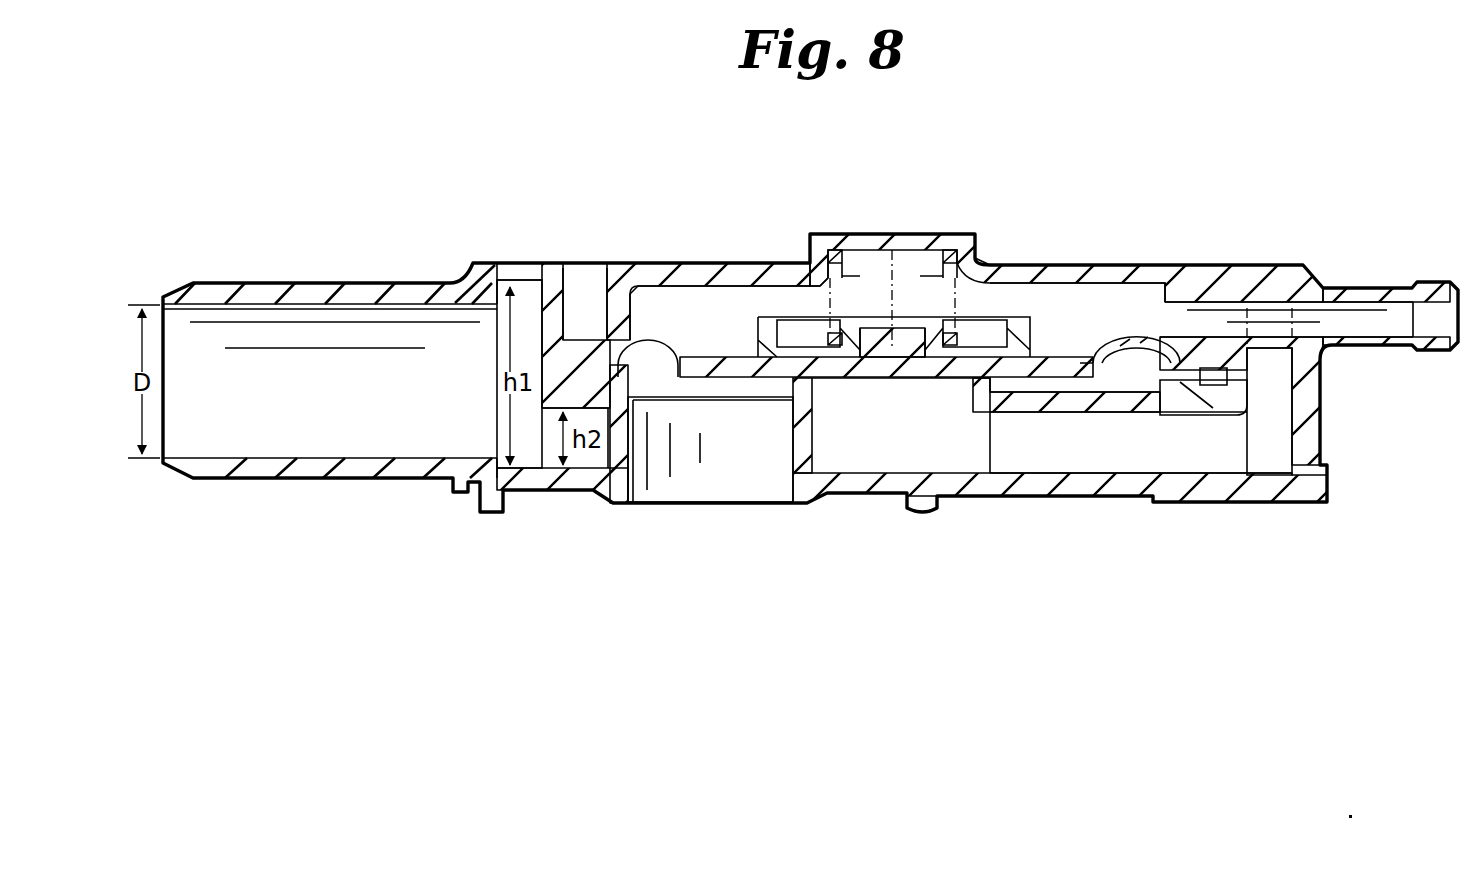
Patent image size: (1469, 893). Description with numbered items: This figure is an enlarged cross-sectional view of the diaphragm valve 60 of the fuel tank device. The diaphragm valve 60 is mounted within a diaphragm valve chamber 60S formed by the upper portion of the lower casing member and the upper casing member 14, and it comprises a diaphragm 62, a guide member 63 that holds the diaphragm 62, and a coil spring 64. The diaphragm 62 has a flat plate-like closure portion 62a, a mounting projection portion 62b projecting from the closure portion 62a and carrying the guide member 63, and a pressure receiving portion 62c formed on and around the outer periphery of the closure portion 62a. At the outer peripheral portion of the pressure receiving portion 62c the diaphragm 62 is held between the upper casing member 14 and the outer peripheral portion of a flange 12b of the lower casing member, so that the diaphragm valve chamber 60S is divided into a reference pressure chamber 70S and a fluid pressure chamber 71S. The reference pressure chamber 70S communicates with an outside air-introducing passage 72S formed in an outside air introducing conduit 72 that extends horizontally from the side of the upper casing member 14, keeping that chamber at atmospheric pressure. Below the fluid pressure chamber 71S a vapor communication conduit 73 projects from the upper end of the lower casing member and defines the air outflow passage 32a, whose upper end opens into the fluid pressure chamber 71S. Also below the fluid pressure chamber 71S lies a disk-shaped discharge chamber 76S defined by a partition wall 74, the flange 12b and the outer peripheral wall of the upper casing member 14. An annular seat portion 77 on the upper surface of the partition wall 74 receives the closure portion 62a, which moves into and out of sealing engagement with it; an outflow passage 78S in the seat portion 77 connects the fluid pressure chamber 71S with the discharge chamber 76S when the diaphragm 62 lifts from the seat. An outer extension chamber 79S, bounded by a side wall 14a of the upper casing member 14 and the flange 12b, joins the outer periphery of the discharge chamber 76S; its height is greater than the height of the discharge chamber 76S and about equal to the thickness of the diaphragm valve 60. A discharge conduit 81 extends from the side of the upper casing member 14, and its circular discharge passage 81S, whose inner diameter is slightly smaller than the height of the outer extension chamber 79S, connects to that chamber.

The flange 12b is at (1268, 493).
The upper casing member 14 is at (963, 255).
The side wall 14a is at (1325, 448).
The air outflow passage 32a is at (728, 492).
The diaphragm valve 60 is at (1080, 298).
The diaphragm valve chamber 60S is at (1243, 232).
The diaphragm 62 is at (713, 193).
The closure portion 62a is at (792, 330).
The mounting projection portion 62b is at (885, 327).
The pressure receiving portion 62c is at (735, 327).
The guide member 63 is at (935, 330).
The coil spring 64 is at (976, 278).
The reference pressure chamber 70S is at (1140, 360).
The fluid pressure chamber 71S is at (698, 385).
The outside air introducing conduit 72 is at (1345, 287).
The outside air-introducing passage 72S is at (1388, 300).
The vapor communication conduit 73 is at (803, 492).
The partition wall 74 is at (1047, 420).
The disk-shaped discharge chamber 76S is at (1135, 465).
The seat portion 77 is at (973, 412).
The outflow passage 78S is at (878, 470).
The outer extension chamber 79S is at (510, 276).
The discharge conduit 81 is at (393, 282).
The discharge passage 81S is at (302, 323).